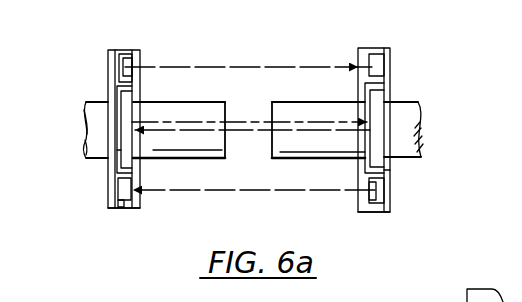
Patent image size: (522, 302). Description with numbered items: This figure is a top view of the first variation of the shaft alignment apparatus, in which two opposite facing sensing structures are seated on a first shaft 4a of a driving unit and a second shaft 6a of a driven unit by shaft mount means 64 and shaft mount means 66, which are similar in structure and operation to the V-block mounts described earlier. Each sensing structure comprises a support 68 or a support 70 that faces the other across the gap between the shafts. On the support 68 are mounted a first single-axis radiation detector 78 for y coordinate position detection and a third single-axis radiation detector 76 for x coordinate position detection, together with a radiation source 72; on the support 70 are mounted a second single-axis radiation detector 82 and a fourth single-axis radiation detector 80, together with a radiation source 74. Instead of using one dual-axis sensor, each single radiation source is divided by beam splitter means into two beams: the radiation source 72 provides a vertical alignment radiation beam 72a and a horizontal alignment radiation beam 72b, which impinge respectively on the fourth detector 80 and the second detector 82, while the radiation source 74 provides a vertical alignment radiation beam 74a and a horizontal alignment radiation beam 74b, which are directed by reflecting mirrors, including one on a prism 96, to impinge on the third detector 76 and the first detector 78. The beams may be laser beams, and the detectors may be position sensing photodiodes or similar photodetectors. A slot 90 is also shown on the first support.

The first shaft 4a is at (97, 100).
The second shaft 6a is at (410, 102).
The shaft mount means 64 is at (140, 208).
The shaft mount means 66 is at (358, 211).
The support 68 is at (110, 50).
The support 70 is at (392, 52).
The radiation source 72 is at (123, 168).
The vertical alignment radiation beam 72a is at (177, 65).
The horizontal alignment radiation beam 72b is at (163, 122).
The radiation source 74 is at (390, 168).
The vertical alignment radiation beam 74a is at (260, 190).
The horizontal alignment radiation beam 74b is at (247, 130).
The third single-axis radiation detector 76 is at (122, 208).
The first single-axis radiation detector 78 is at (120, 161).
The fourth single-axis radiation detector 80 is at (372, 50).
The second single-axis radiation detector 82 is at (387, 93).
The upper slot of first plate 90 is at (130, 49).
The prism 96 is at (380, 203).